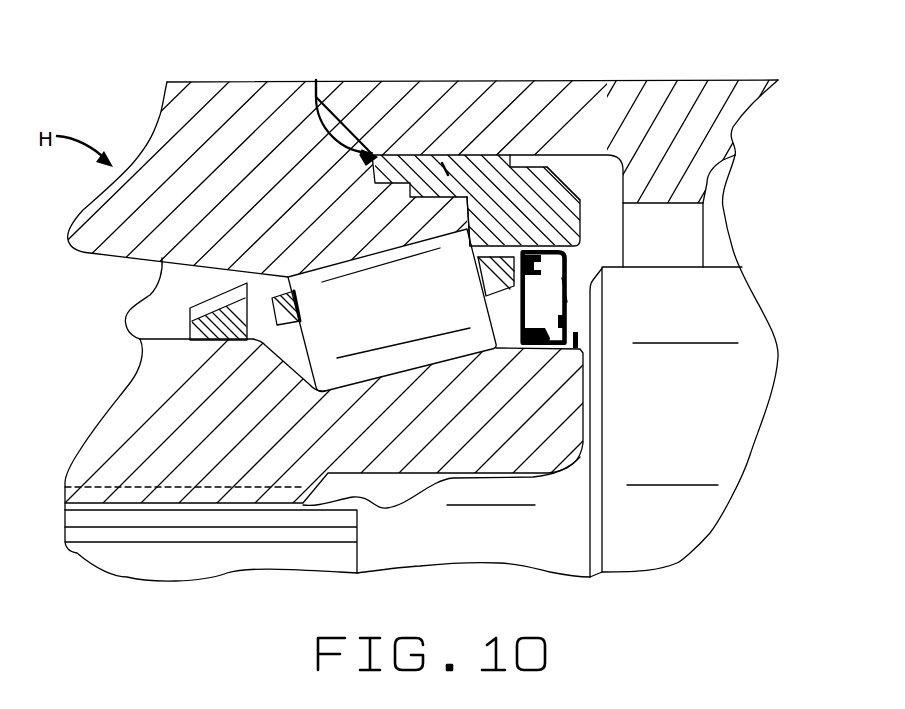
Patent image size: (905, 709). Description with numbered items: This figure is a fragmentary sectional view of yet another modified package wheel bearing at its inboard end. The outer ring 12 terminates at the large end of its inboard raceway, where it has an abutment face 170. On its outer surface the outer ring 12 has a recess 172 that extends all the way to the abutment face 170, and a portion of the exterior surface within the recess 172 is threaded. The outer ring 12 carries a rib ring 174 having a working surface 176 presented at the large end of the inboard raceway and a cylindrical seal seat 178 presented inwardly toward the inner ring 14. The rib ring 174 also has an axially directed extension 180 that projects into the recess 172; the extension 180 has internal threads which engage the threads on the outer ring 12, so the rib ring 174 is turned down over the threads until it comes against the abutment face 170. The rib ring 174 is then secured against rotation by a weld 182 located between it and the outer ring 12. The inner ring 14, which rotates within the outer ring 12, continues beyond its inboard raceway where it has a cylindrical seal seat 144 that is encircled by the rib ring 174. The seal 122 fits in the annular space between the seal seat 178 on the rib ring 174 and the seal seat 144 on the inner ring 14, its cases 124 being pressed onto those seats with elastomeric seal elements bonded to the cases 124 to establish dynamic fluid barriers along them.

The outer bearing ring 12 is at (175, 123).
The inner bearing ring 14 is at (127, 432).
The weld 182 is at (370, 150).
The axially directed extension 180 is at (448, 175).
The abutment face 170 is at (500, 196).
The recess 172 is at (500, 197).
The rib ring 174 is at (540, 197).
The working surface 176 is at (468, 233).
The cylindrical seal seat 178 is at (520, 297).
The seal case 124 is at (570, 302).
The cylindrical seal seat 144 is at (585, 349).
The seal 122 is at (538, 345).